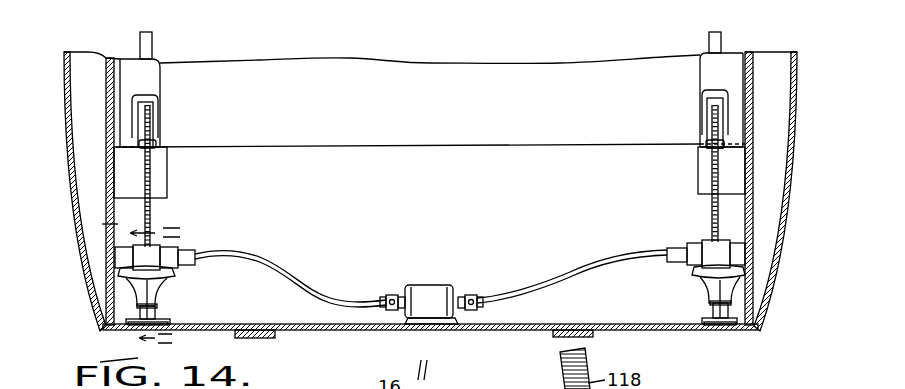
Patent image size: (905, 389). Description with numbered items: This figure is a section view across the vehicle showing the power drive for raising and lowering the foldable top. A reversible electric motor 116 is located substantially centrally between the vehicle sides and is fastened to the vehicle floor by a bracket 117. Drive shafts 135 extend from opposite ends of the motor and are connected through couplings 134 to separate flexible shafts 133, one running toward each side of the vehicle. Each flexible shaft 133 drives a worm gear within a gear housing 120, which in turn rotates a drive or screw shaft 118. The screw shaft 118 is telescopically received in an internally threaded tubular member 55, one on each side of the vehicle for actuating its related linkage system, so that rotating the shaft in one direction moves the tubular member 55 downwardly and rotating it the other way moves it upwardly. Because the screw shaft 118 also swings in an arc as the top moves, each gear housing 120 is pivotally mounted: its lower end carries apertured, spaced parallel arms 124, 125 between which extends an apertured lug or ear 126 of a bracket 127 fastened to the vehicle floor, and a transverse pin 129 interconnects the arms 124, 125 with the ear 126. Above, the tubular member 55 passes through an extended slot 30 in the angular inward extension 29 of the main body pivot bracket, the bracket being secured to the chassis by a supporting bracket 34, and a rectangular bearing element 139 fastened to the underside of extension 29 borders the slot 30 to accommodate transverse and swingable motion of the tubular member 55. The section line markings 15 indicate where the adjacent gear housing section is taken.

The section line 15- 15 is at (140, 284).
The angular inward extension 29 is at (156, 80).
The extended slot 30 is at (150, 120).
The supporting bracket 34 is at (160, 169).
The tubular member 55 is at (152, 44).
The reversible electric motor 116 is at (428, 292).
The bracket 117 is at (432, 328).
The drive or screw shaft 118 is at (150, 212).
The gear housing 120 is at (163, 288).
The arm 124 is at (118, 323).
The arm 125 is at (157, 316).
The lug or ear 126 is at (140, 318).
The bracket 127 is at (168, 328).
The transverse pin 129 is at (152, 310).
The flexible shaft 133 is at (268, 272).
The coupling 134 is at (390, 296).
The drive shaft 135 is at (396, 309).
The rectangular bearing element 139 is at (158, 100).